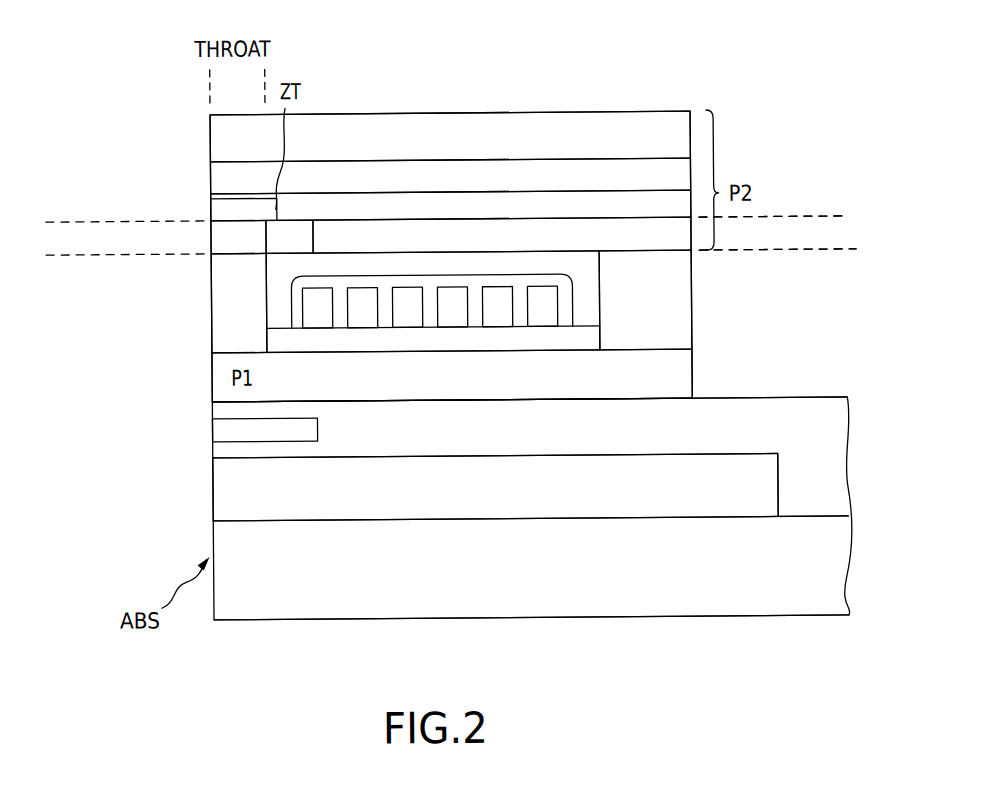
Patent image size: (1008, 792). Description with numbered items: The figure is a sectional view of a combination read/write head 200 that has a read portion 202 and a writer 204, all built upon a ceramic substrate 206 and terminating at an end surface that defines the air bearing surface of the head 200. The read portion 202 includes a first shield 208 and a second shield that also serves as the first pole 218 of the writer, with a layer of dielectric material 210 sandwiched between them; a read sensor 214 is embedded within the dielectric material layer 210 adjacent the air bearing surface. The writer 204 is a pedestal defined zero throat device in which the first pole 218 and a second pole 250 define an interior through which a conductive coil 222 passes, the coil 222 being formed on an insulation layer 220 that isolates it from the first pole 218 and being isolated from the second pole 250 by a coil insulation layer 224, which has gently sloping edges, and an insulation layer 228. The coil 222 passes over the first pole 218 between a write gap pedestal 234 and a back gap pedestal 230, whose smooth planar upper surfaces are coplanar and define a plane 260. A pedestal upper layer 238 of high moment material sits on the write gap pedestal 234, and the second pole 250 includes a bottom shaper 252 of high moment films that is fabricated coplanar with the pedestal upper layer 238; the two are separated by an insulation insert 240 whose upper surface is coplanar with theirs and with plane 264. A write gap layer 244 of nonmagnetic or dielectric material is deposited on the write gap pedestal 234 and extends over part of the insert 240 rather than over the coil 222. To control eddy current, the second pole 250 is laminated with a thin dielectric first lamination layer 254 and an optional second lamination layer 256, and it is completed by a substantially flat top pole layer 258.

The read/write head 200 is at (90, 156).
The read portion 202 is at (102, 357).
The writer 204 is at (160, 115).
The ceramic substrate 206 is at (279, 576).
The first shield 208 is at (279, 496).
The dielectric material layer 210 is at (454, 439).
The read sensor 214 is at (228, 441).
The first pole 218 is at (674, 386).
The insulation layer 220 is at (588, 339).
The conductive coil 222 is at (333, 317).
The coil insulation layer 224 is at (563, 276).
The insulation layer 228 is at (433, 302).
The back gap pedestal 230 is at (674, 330).
The write gap pedestal 234 is at (255, 316).
The pedestal upper layer 238 is at (220, 241).
The insulation insert 240 is at (307, 247).
The write gap layer 244 is at (220, 210).
The second pole 250 is at (691, 103).
The bottom shaper 252 is at (674, 245).
The first lamination layer 254 is at (674, 216).
The second lamination layer 256 is at (674, 188).
The top pole layer 258 is at (674, 146).
The plane 260 is at (830, 252).
The plane 264 is at (822, 219).